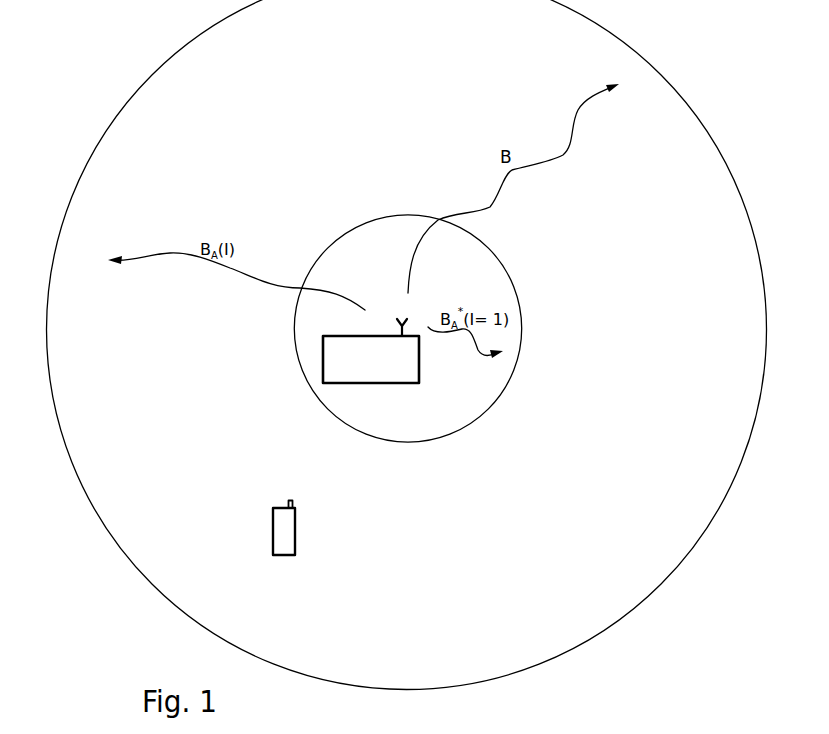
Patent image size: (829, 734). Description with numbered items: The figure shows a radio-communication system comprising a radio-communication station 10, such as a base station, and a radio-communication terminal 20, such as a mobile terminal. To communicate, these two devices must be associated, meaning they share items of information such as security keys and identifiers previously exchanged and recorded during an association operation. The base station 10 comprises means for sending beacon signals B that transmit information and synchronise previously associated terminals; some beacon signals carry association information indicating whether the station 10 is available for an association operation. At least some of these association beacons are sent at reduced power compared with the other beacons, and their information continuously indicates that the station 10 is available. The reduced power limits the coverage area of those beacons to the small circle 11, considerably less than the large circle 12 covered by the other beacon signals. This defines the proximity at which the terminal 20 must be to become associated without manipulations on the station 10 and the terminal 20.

The radio-communication station 10 is at (421, 369).
The circle 11 is at (520, 317).
The circle 12 is at (75, 468).
The radio-communication terminal 20 is at (297, 540).